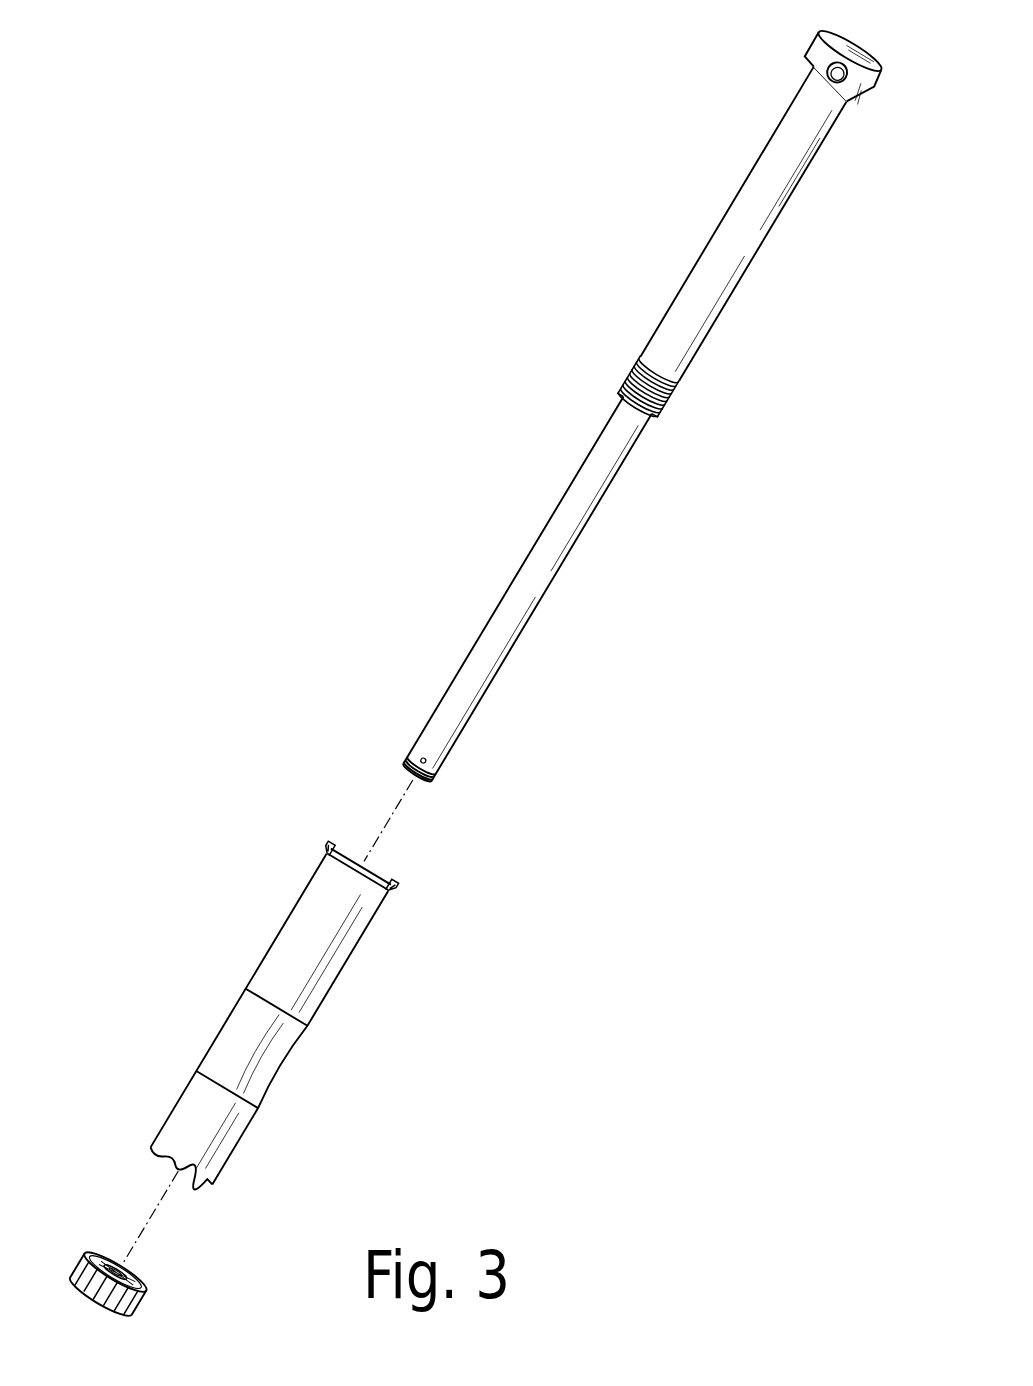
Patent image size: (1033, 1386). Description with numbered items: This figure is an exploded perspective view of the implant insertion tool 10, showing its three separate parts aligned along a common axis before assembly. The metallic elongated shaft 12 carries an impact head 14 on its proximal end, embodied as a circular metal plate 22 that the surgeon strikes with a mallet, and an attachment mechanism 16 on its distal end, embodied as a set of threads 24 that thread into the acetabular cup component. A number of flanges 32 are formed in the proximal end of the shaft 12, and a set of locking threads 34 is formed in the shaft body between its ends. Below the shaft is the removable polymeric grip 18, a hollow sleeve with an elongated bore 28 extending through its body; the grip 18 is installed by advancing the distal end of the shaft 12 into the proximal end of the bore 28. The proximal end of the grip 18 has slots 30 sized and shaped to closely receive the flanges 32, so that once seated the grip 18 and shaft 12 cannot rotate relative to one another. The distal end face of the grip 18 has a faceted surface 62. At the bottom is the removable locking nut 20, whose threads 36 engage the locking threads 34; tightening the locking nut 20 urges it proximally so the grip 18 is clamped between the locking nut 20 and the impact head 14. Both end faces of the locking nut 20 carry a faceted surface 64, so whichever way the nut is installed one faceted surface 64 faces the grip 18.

The implant insertion tool 10 is at (490, 677).
The elongated shaft 12 is at (707, 302).
The impact head 14 is at (865, 82).
The attachment mechanism 16 is at (404, 768).
The grip 18 is at (318, 989).
The locking nut 20 is at (133, 1300).
The metal plate 22 is at (820, 48).
The threads 24 is at (420, 784).
The bore 28 is at (383, 878).
The slots 30 is at (338, 858).
The flanges 32 is at (818, 87).
The locking threads 34 is at (642, 378).
The threads 36 is at (138, 1266).
The faceted surface 62 is at (162, 1160).
The faceted surface 64 is at (75, 1290).